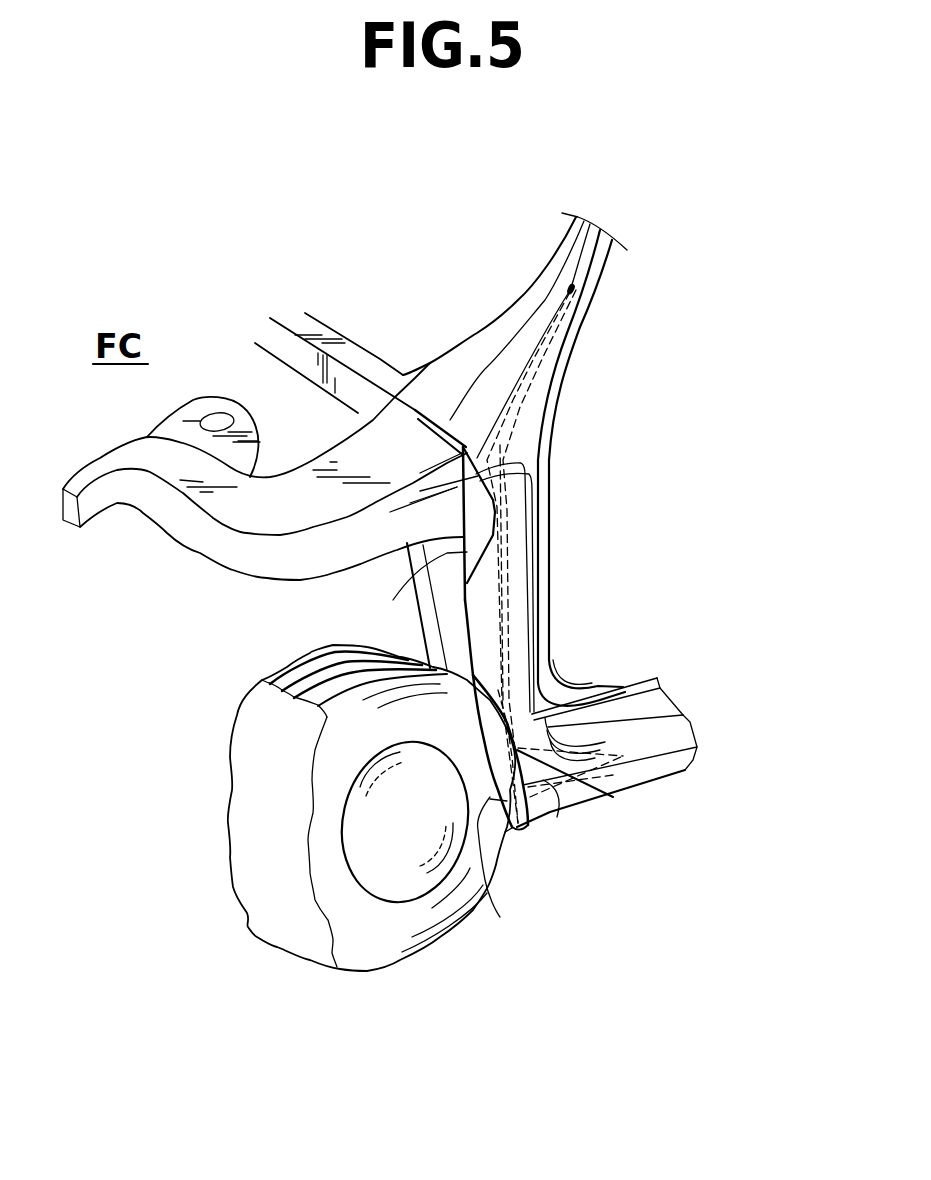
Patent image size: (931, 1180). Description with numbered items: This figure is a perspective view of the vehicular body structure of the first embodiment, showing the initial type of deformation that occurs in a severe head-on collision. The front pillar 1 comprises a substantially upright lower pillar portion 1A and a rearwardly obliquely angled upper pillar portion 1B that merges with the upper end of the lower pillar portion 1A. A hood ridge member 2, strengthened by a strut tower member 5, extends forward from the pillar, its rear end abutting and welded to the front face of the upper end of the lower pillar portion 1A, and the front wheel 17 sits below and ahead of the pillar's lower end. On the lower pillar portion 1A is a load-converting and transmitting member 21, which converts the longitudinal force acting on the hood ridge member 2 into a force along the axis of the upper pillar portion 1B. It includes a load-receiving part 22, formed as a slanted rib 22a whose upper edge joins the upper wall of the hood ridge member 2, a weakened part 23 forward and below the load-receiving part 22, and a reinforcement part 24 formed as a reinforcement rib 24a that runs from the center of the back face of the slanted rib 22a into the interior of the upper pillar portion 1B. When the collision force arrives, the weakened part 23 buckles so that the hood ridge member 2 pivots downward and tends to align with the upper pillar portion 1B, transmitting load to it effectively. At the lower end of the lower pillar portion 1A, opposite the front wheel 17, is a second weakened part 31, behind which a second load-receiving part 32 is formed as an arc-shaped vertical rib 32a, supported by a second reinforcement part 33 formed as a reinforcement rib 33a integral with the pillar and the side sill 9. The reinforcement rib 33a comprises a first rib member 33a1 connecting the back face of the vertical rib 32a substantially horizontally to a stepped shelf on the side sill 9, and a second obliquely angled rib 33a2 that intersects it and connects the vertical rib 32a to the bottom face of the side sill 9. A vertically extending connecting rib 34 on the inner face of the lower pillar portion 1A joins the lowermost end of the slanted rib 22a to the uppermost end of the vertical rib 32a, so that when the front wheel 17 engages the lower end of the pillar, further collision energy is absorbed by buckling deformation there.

The front pillar 1 is at (575, 522).
The lower pillar portion 1A is at (545, 577).
The upper pillar portion 1B is at (593, 287).
The hood ridge member 2 is at (178, 527).
The strut tower member 5 is at (213, 407).
The side sill 9 is at (665, 697).
The front wheel 17 is at (248, 718).
The load-converting and transmitting member 21 is at (443, 398).
The load-receiving part 22 is at (400, 414).
The slanted rib 22a is at (447, 447).
The weakened part 23 is at (430, 578).
The reinforcement part 24 is at (565, 449).
The reinforcement rib 24a is at (508, 410).
The second weakened part 31 is at (503, 837).
The second load-receiving part 32 is at (540, 841).
The vertical rib 32a is at (513, 823).
The second reinforcement part 33 is at (645, 802).
The reinforcement rib 33a is at (802, 853).
The first rib member 33a1 is at (585, 803).
The second obliquely angled rib 33a2 is at (590, 838).
The connecting rib 34 is at (503, 633).